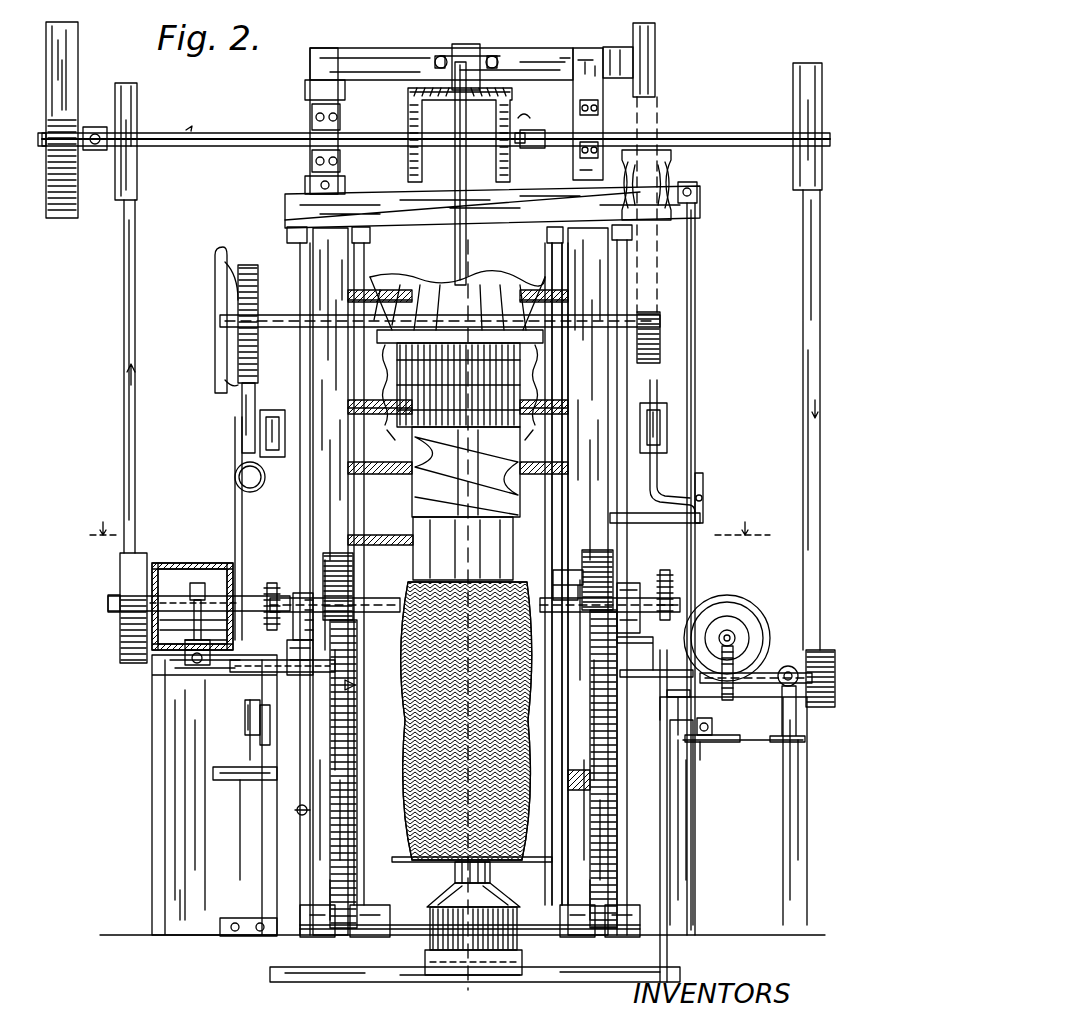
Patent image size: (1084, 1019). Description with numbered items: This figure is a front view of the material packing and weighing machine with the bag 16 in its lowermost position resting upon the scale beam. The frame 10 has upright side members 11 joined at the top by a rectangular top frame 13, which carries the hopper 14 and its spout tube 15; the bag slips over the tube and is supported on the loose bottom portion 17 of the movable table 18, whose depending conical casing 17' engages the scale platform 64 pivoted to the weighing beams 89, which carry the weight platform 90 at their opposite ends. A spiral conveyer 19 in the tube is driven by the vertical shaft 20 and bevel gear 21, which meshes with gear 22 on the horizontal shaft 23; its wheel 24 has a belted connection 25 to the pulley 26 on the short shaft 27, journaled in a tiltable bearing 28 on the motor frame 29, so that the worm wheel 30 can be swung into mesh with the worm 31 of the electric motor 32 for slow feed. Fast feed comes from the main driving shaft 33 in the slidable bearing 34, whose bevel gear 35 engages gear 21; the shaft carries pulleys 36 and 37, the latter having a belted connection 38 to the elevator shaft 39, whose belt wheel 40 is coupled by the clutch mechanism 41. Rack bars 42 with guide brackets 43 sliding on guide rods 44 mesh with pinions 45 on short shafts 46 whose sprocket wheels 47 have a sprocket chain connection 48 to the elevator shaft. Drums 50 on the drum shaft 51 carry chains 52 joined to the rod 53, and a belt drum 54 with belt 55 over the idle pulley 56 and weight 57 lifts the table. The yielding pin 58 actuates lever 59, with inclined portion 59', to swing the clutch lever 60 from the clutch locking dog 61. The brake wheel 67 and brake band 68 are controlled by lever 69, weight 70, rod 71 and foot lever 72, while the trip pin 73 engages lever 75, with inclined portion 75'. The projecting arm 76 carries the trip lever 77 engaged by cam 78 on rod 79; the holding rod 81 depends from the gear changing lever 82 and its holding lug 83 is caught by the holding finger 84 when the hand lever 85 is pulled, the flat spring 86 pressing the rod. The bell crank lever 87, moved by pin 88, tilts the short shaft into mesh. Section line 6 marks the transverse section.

The section line 6— 6 is at (423, 534).
The frame 10 is at (573, 96).
The forward upright side member 11 is at (320, 250).
The rectangular top frame 13 is at (497, 52).
The hopper 14 is at (418, 292).
The spout tube 15 is at (513, 530).
The bag 16 is at (408, 702).
The loose bottom portion 17 is at (475, 872).
The depending conical casing 17' is at (492, 876).
The movable table 18 is at (540, 935).
The spiral conveyer 19 is at (520, 470).
The vertical shaft 20 is at (454, 244).
The bevel gear 21 is at (450, 100).
The gear 22 is at (512, 172).
The horizontal shaft 23 is at (535, 143).
The wheel 24 is at (793, 97).
The belted connection 25 is at (805, 333).
The pulley 26 is at (810, 650).
The short shaft 27 is at (776, 690).
The tiltable bearing 28 is at (801, 665).
The motor frame 29 is at (783, 786).
The worm wheel 30 is at (735, 705).
The worm 31 is at (735, 634).
The electric motor 32 is at (740, 600).
The main driving shaft 33 is at (220, 133).
The slidable bearing 34 is at (310, 118).
The bevel gear 35 is at (425, 165).
The pulley 36 is at (78, 72).
The pulley 37 is at (137, 96).
The belted connection 38 is at (124, 355).
The elevator shaft 39 is at (118, 605).
The belt wheel 40 is at (135, 650).
The clutch mechanism 41 is at (190, 585).
The rack bars 42 is at (358, 775).
The apertured guide brackets 43 is at (366, 585).
The guide rods 44 is at (566, 795).
The pinions 45 is at (338, 555).
The short shafts 46 is at (395, 612).
The sprocket wheels 47 is at (290, 650).
The sprocket chain connection 48 is at (272, 583).
The drums 50 is at (397, 352).
The drum shaft 51 is at (279, 315).
The chains 52 is at (395, 397).
The rod 53 is at (470, 978).
The belt drum 54 is at (656, 300).
The belt 55 is at (686, 232).
The idle pulley 56 is at (655, 70).
The weight 57 is at (673, 164).
The yielding pin 58 is at (300, 815).
The lever 59 is at (282, 692).
The inclined portion 59' is at (377, 689).
The clutch lever 60 is at (190, 655).
The clutch locking dog 61 is at (200, 598).
The scale platform 64 is at (400, 967).
The brake wheel 67 is at (258, 284).
The brake band 68 is at (250, 255).
The lever 69 is at (242, 432).
The weight 70 is at (236, 480).
The rod 71 is at (234, 452).
The foot lever 72 is at (248, 937).
The yielding trip pin 73 is at (218, 780).
The lever 75 is at (219, 719).
The inclined portion 75' is at (239, 730).
The projecting arm 76 is at (653, 670).
The trip lever 77 is at (558, 685).
The cam 78 is at (563, 720).
The rod 79 is at (570, 780).
The holding rod 81 is at (695, 396).
The gear changing lever 82 is at (548, 198).
The holding lug 83 is at (656, 664).
The holding finger 84 is at (675, 712).
The hand lever 85 is at (703, 480).
The flat spring 86 is at (712, 725).
The bell crank lever 87 is at (706, 735).
The pin 88 is at (668, 810).
The weighing beams 89 is at (262, 418).
The weight platform 90 is at (387, 537).